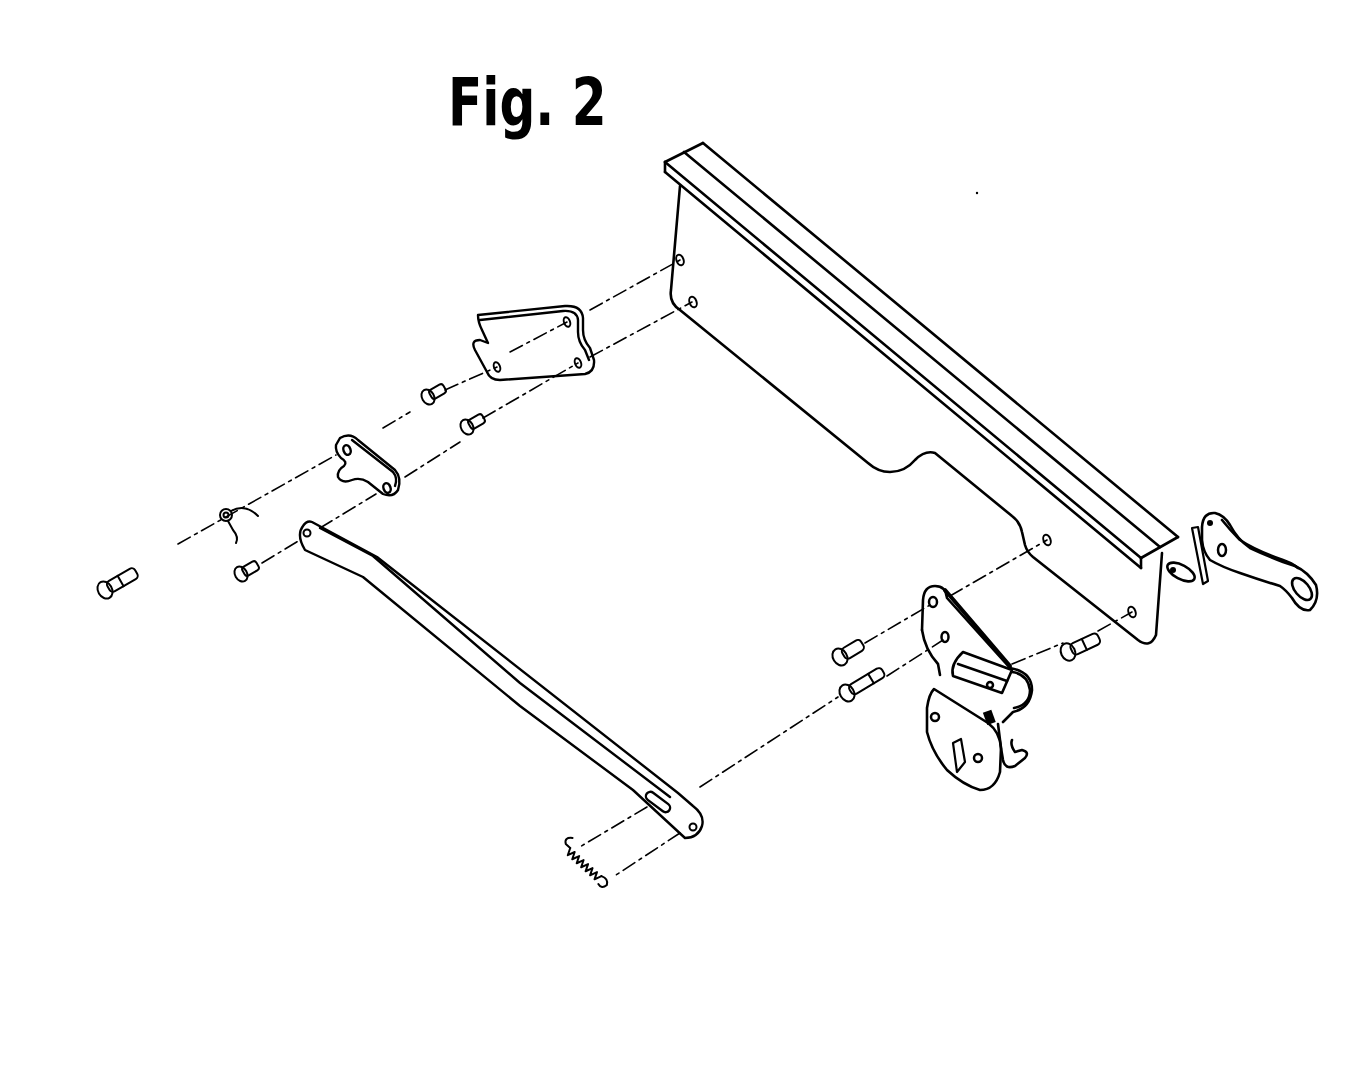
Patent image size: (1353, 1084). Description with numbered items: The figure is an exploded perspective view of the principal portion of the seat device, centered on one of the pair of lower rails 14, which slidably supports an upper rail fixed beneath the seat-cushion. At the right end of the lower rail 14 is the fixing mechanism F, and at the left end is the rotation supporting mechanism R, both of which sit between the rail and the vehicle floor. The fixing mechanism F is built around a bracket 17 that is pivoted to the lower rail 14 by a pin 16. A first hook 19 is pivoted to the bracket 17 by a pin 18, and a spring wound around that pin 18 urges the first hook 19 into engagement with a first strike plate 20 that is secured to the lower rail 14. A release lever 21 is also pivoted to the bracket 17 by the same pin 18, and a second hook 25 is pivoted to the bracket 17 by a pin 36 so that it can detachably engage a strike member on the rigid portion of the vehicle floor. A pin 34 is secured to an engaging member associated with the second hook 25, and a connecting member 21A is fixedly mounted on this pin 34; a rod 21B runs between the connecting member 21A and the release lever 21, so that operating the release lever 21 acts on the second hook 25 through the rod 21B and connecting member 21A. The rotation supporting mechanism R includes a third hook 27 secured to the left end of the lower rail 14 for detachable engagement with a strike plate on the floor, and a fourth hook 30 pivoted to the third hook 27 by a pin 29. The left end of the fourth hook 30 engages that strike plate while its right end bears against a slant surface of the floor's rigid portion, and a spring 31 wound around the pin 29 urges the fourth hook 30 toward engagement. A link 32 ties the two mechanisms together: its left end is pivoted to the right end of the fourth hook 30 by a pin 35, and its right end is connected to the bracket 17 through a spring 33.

The lower rail 14 is at (962, 367).
The pin 16 is at (830, 652).
The bracket 17 is at (940, 737).
The pin 18 is at (1012, 704).
The first hook 19 is at (1022, 685).
The first strike plate 20 is at (1085, 653).
The release lever 21 is at (1263, 567).
The connecting member 21A is at (1184, 584).
The rod 21B is at (1192, 526).
The second hook 25 is at (1005, 768).
The third hook 27 is at (522, 322).
The pin 29 is at (122, 598).
The fourth hook 30 is at (402, 463).
The spring 31 is at (225, 510).
The link 32 is at (480, 683).
The spring 33 is at (572, 880).
The pin 34 is at (928, 718).
The pin 35 is at (238, 582).
The pin 36 is at (978, 762).
The rotation supporting mechanism R is at (412, 503).
The fixing mechanism F is at (1052, 787).